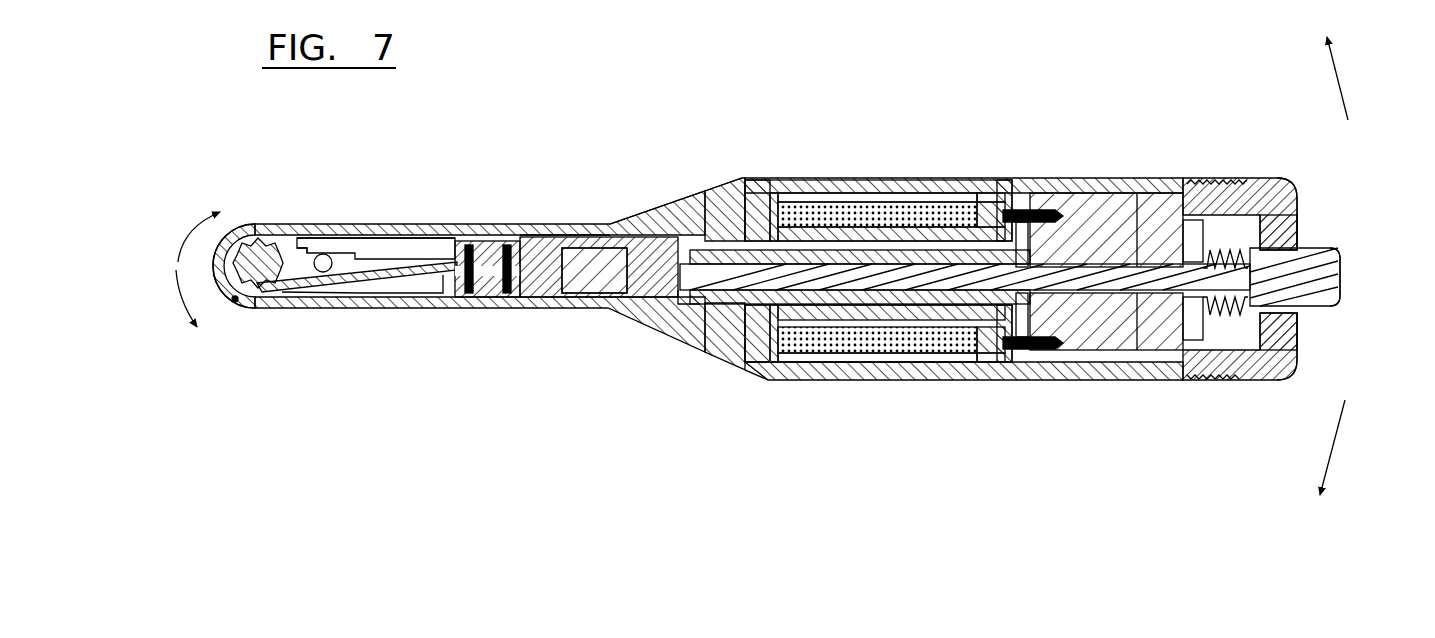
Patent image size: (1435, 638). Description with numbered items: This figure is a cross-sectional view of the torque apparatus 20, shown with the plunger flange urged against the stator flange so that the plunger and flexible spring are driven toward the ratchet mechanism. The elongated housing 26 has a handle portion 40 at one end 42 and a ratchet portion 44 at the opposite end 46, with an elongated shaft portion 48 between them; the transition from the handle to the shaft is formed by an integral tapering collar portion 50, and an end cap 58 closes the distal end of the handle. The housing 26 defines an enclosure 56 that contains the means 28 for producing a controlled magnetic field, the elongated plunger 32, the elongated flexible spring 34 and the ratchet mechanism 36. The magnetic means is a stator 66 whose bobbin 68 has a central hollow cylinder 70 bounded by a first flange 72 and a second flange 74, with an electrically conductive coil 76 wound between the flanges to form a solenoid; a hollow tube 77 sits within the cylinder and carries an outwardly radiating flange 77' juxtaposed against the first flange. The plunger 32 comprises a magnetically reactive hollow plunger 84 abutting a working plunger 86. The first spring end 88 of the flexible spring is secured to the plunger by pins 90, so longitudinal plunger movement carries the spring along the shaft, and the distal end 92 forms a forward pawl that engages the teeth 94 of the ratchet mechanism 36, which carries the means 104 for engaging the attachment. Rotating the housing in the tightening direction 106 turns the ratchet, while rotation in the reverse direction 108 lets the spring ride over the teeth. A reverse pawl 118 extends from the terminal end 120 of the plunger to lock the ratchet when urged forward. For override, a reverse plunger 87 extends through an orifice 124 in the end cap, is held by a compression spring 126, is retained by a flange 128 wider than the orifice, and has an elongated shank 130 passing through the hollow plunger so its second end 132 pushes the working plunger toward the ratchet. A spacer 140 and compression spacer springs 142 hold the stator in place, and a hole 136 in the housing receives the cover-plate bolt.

The torque apparatus 20 is at (1146, 96).
The elongated housing 26 is at (694, 366).
The means for producing a controlled magnetic field 28 is at (883, 178).
The elongated plunger 32 is at (662, 250).
The elongated flexible spring 34 is at (330, 290).
The ratchet mechanism 36 is at (233, 302).
The handle portion 40 is at (994, 178).
The first end of housing 42 is at (1210, 182).
The ratchet portion 44 is at (262, 223).
The second end of housing 46 is at (222, 258).
The elongated shaft portion 48 is at (548, 237).
The tapering collar portion 50 is at (717, 183).
The enclosure 56 is at (425, 297).
The end cap 58 is at (1302, 182).
The stator 66 is at (868, 200).
The bobbin 68 is at (920, 195).
The central hollow cylinder 70 is at (900, 228).
The first flange 72 is at (988, 205).
The second flange 74 is at (775, 193).
The electrically conductive coil 76 is at (808, 193).
The hollow tube 77 is at (731, 283).
The outwardly radiating flange of tube 77' is at (1035, 279).
The magnetically reactive hollow plunger 84 is at (703, 238).
The working plunger 86 is at (592, 265).
The reverse plunger 87 is at (1325, 305).
The first spring end 88 is at (500, 297).
The pins 90 is at (468, 240).
The distal end of flexible spring 92 is at (283, 295).
The teeth 94 is at (290, 237).
The means for engaging attachment means 104 is at (247, 232).
The tightening direction arrow 106 is at (180, 238).
The reverse direction arrow 108 is at (175, 304).
The reverse pawl 118 is at (314, 240).
The terminal end of plunger 120 is at (338, 246).
The orifice 124 is at (1342, 258).
The compression spring 126 is at (1250, 380).
The flange of reverse plunger 128 is at (1298, 236).
The elongated shank 130 is at (1140, 195).
The second end of reverse plunger 132 is at (680, 300).
The hole 136 is at (322, 288).
The spacer 140 is at (1165, 180).
The compression spacer springs 142 is at (1022, 222).